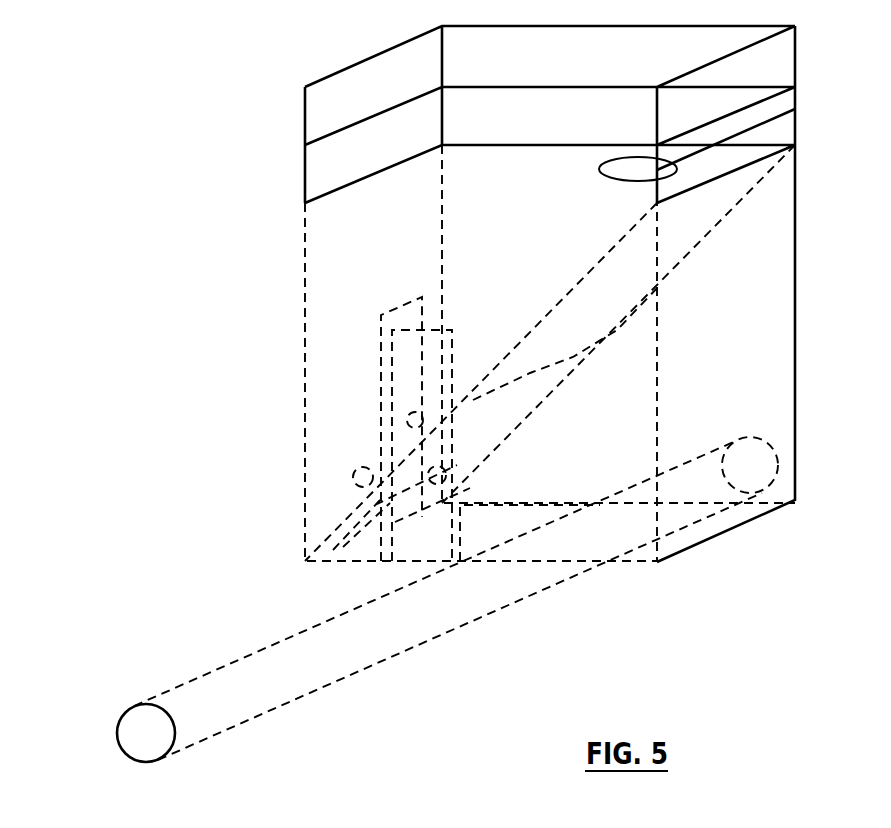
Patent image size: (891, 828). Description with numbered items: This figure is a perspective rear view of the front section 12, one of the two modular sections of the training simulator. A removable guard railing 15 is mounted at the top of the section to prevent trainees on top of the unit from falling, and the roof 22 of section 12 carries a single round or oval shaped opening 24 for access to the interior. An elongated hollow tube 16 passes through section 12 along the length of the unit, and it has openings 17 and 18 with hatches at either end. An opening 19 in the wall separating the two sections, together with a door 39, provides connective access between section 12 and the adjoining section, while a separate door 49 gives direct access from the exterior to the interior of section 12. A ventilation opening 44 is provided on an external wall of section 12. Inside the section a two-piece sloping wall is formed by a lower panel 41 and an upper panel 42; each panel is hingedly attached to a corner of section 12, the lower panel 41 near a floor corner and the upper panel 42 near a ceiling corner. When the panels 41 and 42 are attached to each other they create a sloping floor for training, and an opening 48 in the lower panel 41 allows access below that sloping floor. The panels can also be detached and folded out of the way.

The section 12 is at (735, 545).
The removable guard railing 15 is at (797, 62).
The elongated hollow tube 16 is at (443, 607).
The opening 17 is at (132, 733).
The opening 18 is at (765, 462).
The opening 19 is at (489, 523).
The roof 22 is at (723, 157).
The round or oval shaped opening 24 is at (624, 168).
The door 39 is at (407, 374).
The lower panel 41 is at (517, 402).
The upper panel 42 is at (680, 228).
The ventilation opening 44 is at (372, 482).
The opening 48 is at (372, 518).
The door 49 is at (398, 317).